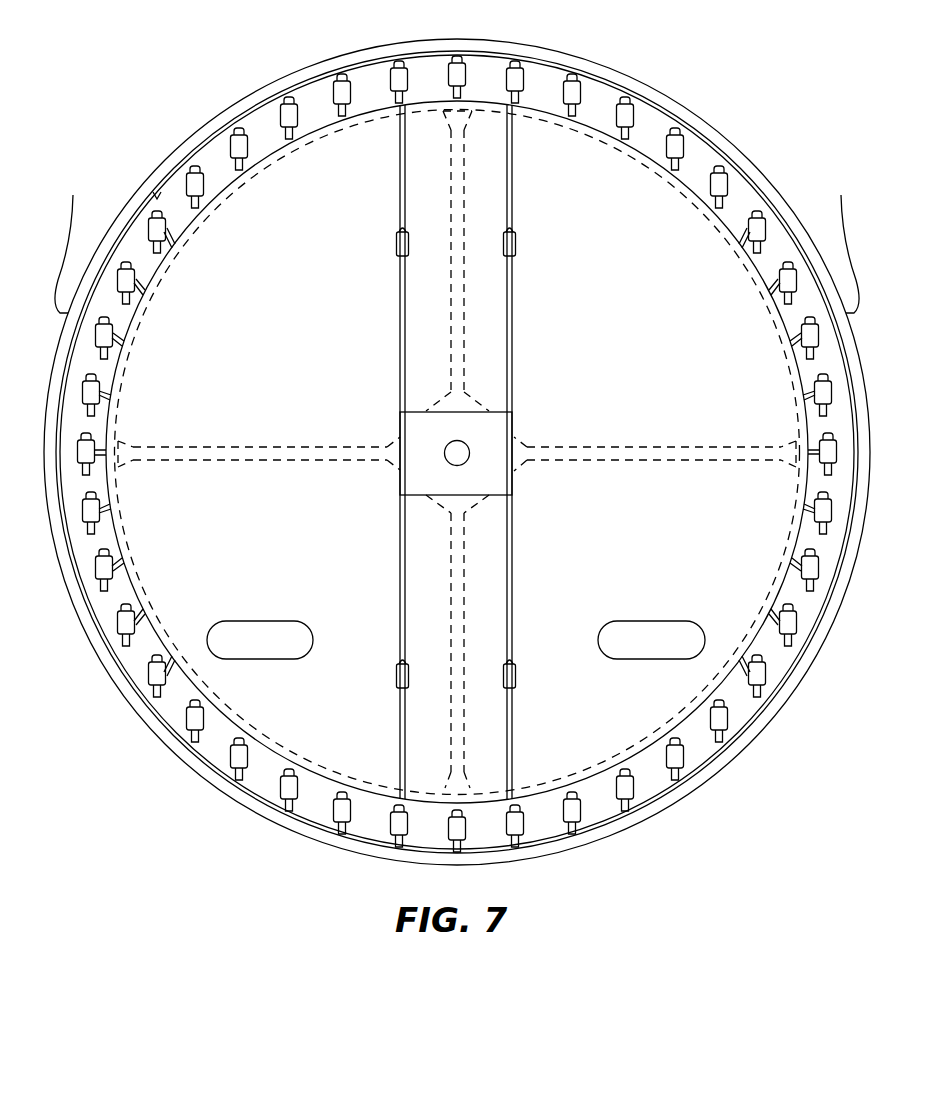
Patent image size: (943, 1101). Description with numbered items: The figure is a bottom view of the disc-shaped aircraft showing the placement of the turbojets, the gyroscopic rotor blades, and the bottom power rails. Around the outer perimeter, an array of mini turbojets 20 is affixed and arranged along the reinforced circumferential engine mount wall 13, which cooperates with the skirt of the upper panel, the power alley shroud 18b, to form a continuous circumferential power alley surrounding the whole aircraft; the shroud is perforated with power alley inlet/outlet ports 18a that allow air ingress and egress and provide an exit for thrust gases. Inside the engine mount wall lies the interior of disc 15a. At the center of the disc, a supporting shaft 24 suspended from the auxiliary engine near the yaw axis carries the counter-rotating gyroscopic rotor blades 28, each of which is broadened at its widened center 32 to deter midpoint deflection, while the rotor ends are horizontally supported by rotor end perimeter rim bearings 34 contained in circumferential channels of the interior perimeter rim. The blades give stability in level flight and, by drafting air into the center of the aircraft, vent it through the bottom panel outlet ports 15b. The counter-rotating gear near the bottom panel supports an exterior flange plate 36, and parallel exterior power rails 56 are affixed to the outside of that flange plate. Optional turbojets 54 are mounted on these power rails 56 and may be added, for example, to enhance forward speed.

The reinforced circumferential engine mount wall 13 is at (533, 107).
The interior of disc 15a is at (157, 197).
The bottom panel outlet ports 15b is at (262, 645).
The power alley inlet/outlet ports 18a is at (113, 222).
The power alley shroud 18b is at (245, 104).
The mini turbojets 20 is at (390, 78).
The supporting shaft for gyroscopic rotor blades 24 is at (462, 452).
The counter-rotating gyroscopic rotor blades 28 is at (466, 155).
The widened centers of gyroscopic rotor blades 32 is at (520, 458).
The rotor end perimeter rim bearings 34 is at (446, 118).
The exterior flange plate 36 is at (405, 482).
The optional turbojets on power rails 54 is at (397, 245).
The exterior power rails 56 is at (400, 335).